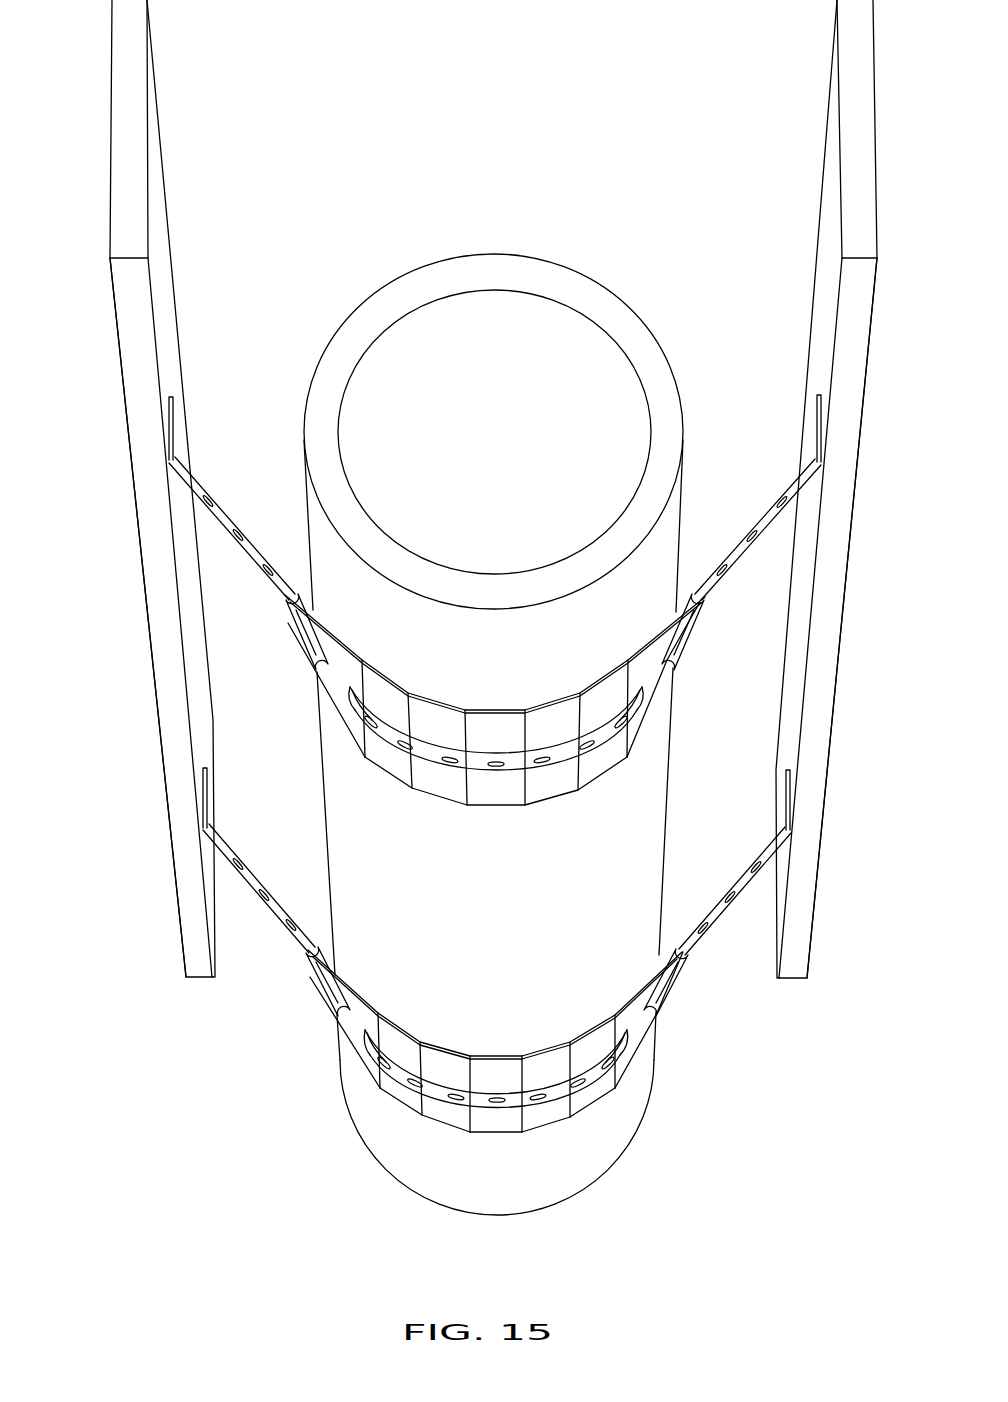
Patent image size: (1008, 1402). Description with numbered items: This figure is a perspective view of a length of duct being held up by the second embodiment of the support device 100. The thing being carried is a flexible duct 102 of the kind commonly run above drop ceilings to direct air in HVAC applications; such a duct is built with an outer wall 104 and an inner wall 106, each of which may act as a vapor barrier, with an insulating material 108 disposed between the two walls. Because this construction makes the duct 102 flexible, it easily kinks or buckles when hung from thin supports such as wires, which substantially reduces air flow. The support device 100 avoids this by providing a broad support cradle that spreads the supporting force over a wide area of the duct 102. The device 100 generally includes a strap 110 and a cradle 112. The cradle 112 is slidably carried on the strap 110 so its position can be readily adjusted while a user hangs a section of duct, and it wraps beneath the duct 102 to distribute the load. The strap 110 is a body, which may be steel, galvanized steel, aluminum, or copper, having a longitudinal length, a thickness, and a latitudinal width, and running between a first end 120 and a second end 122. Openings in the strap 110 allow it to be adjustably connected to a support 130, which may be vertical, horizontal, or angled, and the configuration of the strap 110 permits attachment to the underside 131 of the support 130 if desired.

The support device 100 is at (492, 809).
The flexible duct 102 is at (533, 705).
The outer wall 104 is at (668, 523).
The inner wall 106 is at (651, 452).
The insulating material 108 is at (533, 431).
The strap 110 is at (226, 560).
The cradle 112 is at (332, 680).
The first end 120 is at (173, 423).
The second end 122 is at (822, 421).
The support 130 is at (167, 192).
The underside 131 is at (138, 322).